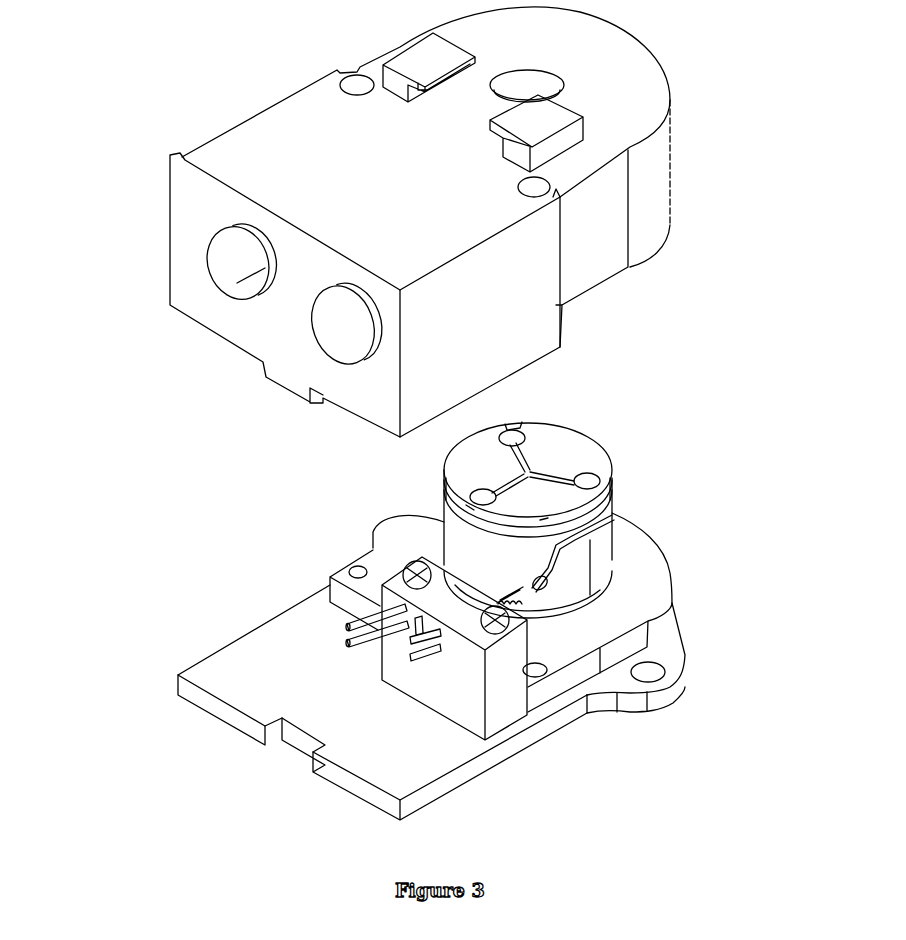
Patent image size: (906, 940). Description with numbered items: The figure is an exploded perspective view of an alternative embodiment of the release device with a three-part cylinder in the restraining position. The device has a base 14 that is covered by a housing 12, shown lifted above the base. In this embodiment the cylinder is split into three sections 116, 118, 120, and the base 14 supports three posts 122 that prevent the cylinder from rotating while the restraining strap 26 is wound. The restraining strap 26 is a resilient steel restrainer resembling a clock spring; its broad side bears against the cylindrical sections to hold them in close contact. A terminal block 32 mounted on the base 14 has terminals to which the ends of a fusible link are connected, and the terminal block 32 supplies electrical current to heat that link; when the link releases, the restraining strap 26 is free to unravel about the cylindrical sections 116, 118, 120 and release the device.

The housing 12 is at (166, 246).
The base 14 is at (650, 605).
The restraining strap 26 is at (441, 540).
The terminal block 32 is at (371, 585).
The cylinder section 116 is at (445, 467).
The cylinder section 118 is at (590, 498).
The cylinder section 120 is at (608, 442).
The posts 122 is at (534, 421).